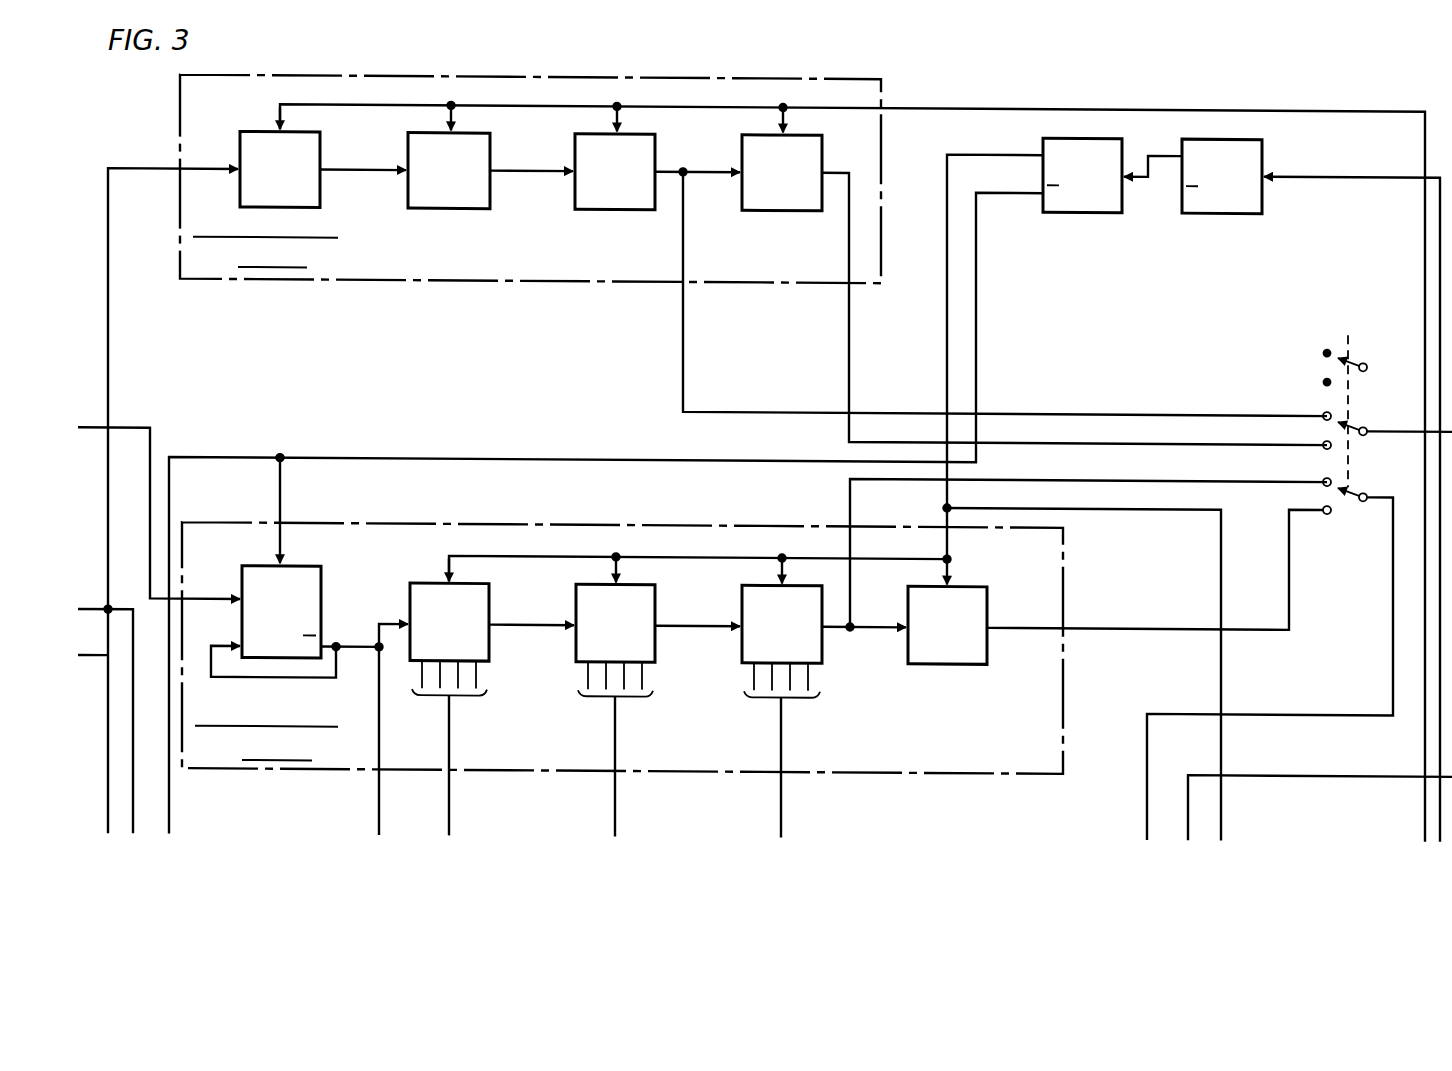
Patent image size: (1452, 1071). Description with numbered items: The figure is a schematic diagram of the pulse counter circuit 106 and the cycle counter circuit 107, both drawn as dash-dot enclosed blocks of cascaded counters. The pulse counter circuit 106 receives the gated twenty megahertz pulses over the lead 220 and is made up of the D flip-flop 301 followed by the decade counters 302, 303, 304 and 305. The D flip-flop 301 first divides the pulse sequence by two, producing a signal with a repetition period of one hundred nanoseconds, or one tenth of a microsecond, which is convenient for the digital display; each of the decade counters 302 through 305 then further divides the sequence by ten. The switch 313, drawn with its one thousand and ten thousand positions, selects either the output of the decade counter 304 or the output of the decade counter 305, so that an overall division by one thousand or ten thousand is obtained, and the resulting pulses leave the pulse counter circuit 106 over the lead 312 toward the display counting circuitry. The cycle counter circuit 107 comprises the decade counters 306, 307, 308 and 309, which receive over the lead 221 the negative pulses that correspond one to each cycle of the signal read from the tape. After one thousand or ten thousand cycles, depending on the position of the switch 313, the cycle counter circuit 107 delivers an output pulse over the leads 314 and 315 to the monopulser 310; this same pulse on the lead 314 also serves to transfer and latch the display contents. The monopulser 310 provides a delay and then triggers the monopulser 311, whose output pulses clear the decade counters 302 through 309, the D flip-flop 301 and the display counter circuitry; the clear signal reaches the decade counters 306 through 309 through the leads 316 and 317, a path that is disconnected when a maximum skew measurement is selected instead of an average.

The pulse counter circuit 106 is at (284, 772).
The cycle counter circuit 107 is at (272, 282).
The lead 220 is at (208, 601).
The lead 221 is at (149, 170).
The D flip-flop 301 is at (258, 566).
The decade counter 302 is at (427, 585).
The decade counter 303 is at (591, 587).
The decade counter 304 is at (751, 587).
The decade counter 305 is at (922, 587).
The decade counter 306 is at (270, 132).
The decade counter 307 is at (424, 132).
The decade counter 308 is at (594, 133).
The decade counter 309 is at (758, 133).
The monopulser 310 is at (1220, 211).
The monopulser 311 is at (1087, 211).
The lead 312 is at (1392, 545).
The switch 313 is at (1349, 347).
The lead 314 is at (1398, 422).
The lead 315 is at (1327, 176).
The lead 316 is at (999, 155).
The lead 317 is at (1422, 807).